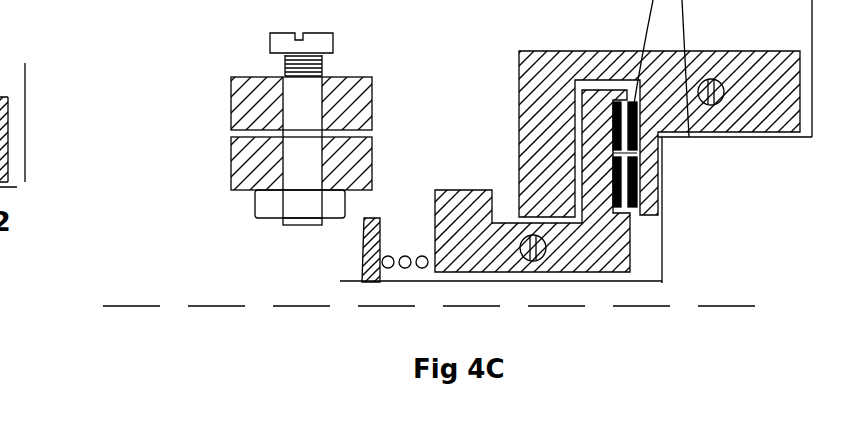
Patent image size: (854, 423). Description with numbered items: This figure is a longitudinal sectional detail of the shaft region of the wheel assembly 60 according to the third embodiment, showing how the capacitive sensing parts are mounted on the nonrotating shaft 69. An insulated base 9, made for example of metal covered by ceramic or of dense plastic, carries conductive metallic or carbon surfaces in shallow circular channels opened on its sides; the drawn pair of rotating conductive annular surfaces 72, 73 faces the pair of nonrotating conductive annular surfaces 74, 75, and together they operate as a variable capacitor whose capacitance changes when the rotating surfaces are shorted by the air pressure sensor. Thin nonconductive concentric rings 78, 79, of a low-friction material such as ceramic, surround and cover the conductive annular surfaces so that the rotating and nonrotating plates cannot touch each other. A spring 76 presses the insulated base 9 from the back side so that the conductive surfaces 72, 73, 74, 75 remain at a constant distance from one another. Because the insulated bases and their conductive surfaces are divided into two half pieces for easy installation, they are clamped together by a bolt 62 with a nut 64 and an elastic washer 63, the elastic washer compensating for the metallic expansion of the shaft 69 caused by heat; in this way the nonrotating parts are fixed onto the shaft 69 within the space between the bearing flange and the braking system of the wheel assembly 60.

The insulated base 9 is at (233, 163).
The wheel assembly 60 is at (90, 0).
The bolt 62 is at (270, 43).
The elastic washer 63 is at (330, 63).
The nut 64 is at (255, 202).
The nonrotating shaft 69 is at (108, 287).
The rotating conductive annular surface 72 is at (638, 112).
The rotating conductive annular surface 73 is at (637, 182).
The nonrotating conductive annular surface 74 is at (616, 149).
The nonrotating conductive annular surface 75 is at (620, 178).
The spring 76 is at (405, 254).
The nonconductive concentric ring 78 is at (616, 156).
The nonconductive concentric ring 79 is at (640, 212).